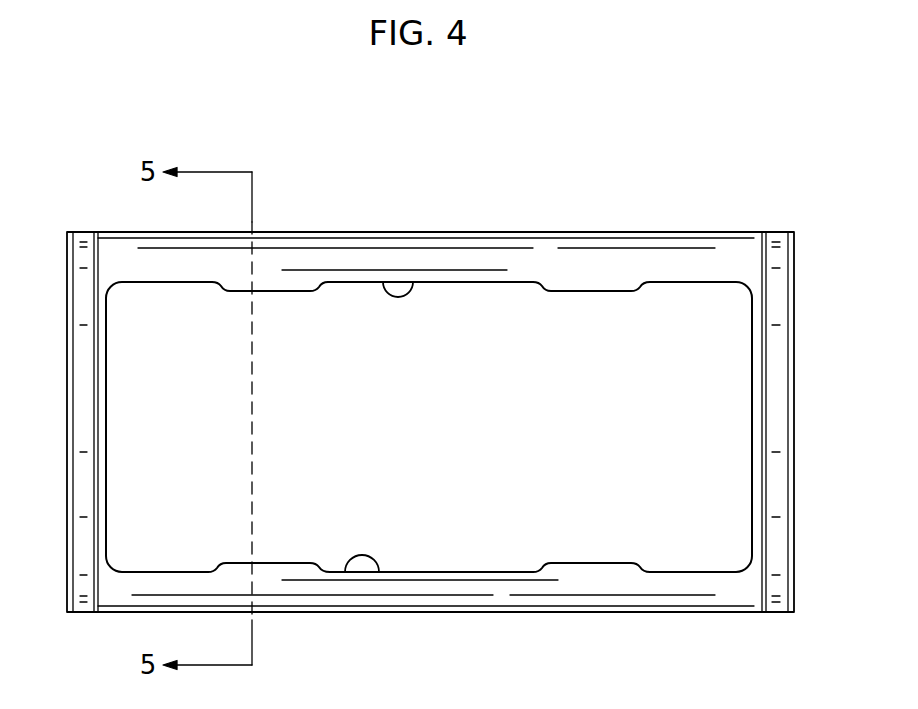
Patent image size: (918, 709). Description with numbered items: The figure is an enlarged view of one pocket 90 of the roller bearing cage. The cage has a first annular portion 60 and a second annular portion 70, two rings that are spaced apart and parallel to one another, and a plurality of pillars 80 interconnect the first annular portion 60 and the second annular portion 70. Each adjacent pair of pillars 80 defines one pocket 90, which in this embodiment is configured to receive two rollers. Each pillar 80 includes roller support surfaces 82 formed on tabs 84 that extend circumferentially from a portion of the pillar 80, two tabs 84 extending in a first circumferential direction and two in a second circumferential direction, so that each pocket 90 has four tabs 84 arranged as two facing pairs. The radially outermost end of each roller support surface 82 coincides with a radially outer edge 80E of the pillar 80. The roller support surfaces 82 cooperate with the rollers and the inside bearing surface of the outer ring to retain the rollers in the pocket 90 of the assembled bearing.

The first annular portion 60 is at (83, 418).
The second annular portion 70 is at (773, 417).
The pillar 80 is at (458, 262).
The radially outer edge of the pillar 80E is at (412, 290).
The roller support surface 82 is at (292, 283).
The tab 84 is at (265, 280).
The pocket 90 is at (197, 483).